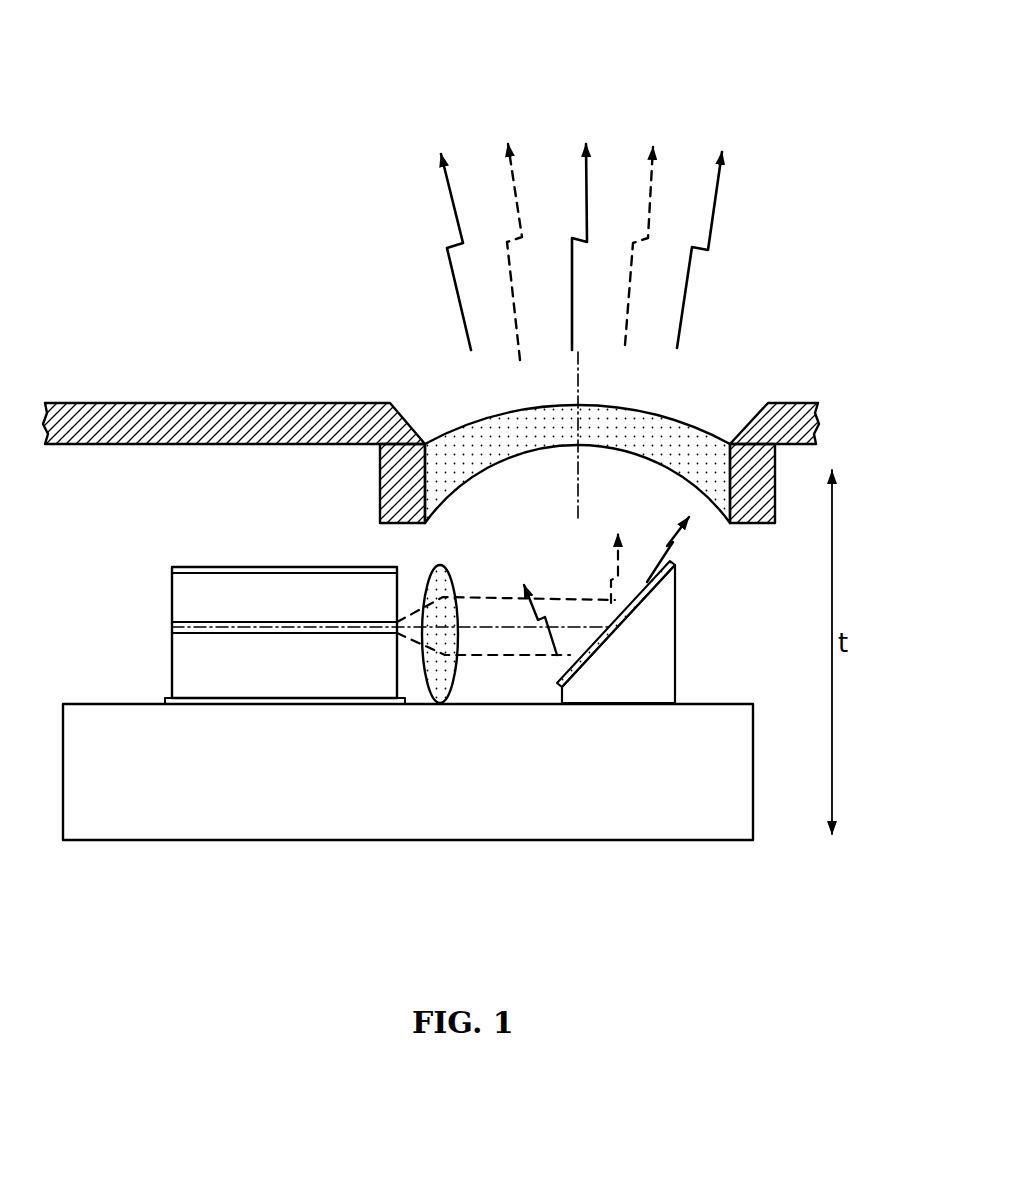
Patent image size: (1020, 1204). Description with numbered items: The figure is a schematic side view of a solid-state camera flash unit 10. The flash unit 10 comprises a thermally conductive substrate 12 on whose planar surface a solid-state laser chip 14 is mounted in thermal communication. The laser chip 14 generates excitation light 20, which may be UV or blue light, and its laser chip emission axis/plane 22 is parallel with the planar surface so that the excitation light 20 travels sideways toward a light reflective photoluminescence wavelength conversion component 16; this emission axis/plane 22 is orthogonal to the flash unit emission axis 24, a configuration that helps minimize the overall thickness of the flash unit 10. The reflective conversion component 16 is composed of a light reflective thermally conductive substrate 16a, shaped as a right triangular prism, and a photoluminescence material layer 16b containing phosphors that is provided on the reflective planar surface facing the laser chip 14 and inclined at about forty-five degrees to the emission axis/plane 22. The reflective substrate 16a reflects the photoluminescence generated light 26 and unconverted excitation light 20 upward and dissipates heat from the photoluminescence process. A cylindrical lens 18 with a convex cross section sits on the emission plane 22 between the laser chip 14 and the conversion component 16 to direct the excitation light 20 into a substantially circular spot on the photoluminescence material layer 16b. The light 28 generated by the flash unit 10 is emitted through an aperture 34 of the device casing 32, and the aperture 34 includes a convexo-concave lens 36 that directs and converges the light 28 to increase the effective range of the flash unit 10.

The flash unit 10 is at (263, 887).
The thermally conductive substrate 12 is at (437, 787).
The solid-state laser chip 14 is at (162, 567).
The light reflective photoluminescence wavelength conversion component 16 is at (690, 565).
The light reflective substrate 16a is at (667, 678).
The photoluminescence material layer 16b is at (590, 658).
The lens 18 is at (443, 585).
The excitation light 20 is at (480, 597).
The laser chip emission axis/plane 22 is at (245, 625).
The flash unit emission axis 24 is at (576, 383).
The photoluminescence generated light 26 is at (727, 550).
The light generated by the flash unit 28 is at (748, 88).
The device casing 32 is at (235, 407).
The aperture 34 is at (714, 401).
The lens 36 is at (455, 440).